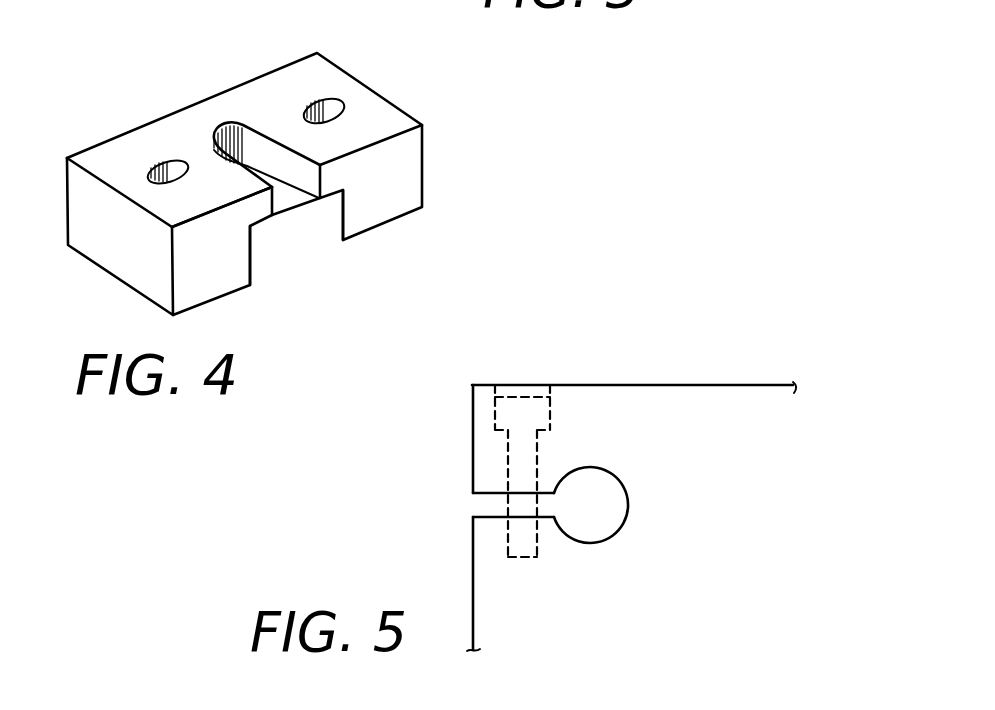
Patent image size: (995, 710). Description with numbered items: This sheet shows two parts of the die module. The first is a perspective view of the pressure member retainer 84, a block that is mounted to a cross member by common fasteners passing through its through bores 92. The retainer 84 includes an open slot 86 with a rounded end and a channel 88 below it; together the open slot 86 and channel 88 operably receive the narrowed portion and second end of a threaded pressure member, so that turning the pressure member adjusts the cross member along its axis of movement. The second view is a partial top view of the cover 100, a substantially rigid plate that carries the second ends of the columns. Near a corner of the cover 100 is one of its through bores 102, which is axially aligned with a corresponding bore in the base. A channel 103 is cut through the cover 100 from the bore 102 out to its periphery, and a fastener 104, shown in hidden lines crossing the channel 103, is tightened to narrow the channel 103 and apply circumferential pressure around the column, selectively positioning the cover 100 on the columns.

In FIG. 4, the pressure member retainer 84 is at (388, 102).
In FIG. 4, the open slot 86 is at (254, 138).
In FIG. 4, the channel 88 is at (330, 212).
In FIG. 4, the through bores 92 is at (157, 163).
In FIG. 5, the cover 100 is at (687, 386).
In FIG. 5, the through bores 102 is at (608, 486).
In FIG. 5, the channel 103 is at (491, 494).
In FIG. 5, the fastener 104 is at (516, 396).